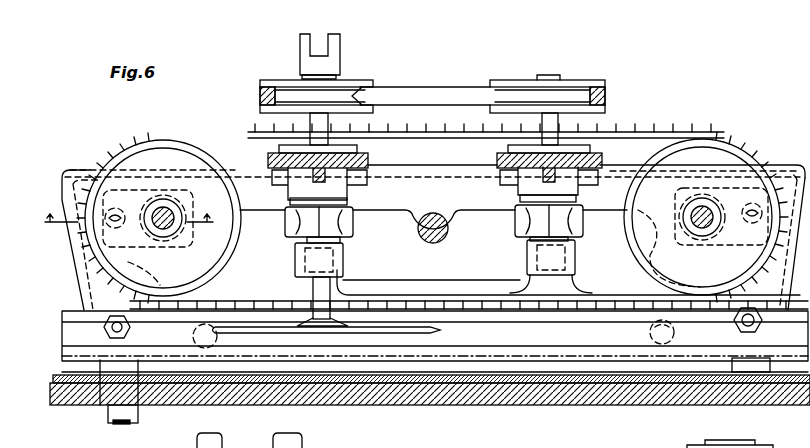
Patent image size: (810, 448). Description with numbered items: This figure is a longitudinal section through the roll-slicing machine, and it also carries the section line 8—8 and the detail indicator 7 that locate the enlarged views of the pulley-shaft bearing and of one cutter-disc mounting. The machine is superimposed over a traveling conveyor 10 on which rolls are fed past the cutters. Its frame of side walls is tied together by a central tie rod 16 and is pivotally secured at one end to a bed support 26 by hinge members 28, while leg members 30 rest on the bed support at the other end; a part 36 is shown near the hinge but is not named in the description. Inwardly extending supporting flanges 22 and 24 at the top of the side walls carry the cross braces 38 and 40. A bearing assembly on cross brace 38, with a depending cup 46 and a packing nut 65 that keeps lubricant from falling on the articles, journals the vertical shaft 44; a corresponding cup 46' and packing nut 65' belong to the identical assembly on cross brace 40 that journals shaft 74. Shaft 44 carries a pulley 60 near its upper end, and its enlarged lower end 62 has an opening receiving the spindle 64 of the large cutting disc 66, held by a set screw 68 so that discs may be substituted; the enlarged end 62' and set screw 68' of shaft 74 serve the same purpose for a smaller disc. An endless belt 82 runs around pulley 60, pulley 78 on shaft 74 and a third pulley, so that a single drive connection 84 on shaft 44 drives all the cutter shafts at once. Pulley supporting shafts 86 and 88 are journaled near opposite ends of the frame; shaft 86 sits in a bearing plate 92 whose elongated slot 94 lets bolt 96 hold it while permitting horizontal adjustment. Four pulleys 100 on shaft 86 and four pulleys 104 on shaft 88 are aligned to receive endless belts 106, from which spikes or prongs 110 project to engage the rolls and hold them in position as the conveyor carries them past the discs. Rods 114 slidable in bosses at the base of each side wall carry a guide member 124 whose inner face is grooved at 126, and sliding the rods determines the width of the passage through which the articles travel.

The detail section indicator 7 is at (165, 89).
The section line 8— 8 is at (128, 205).
The traveling conveyor 10 is at (432, 378).
The central tie rod 16 is at (418, 233).
The supporting flange 22 is at (282, 182).
The supporting flange 24 is at (510, 181).
The bed support 26 is at (66, 403).
The hinge members 28 is at (100, 405).
The leg members 30 is at (750, 363).
The nut 36 is at (78, 425).
The cross brace 38 is at (272, 163).
The cross brace 40 is at (500, 163).
The shaft 44 is at (270, 118).
The depending cup 46 is at (335, 194).
The washer 46' is at (566, 193).
The pulley 60 is at (283, 84).
The enlarged lower end of shaft 62 is at (299, 278).
The adjusting screw 62' is at (528, 250).
The spindle 64 is at (308, 285).
The packing nut 65 is at (301, 222).
The lock nut 65' is at (530, 221).
The cutting disc 66 is at (568, 282).
The set screw 68 is at (336, 260).
The slide block 68' is at (562, 266).
The shaft 74 is at (552, 120).
The pulley 78 is at (603, 84).
The endless belt 82 is at (453, 93).
The drive connection 84 is at (332, 64).
The pulley supporting shaft 86 is at (160, 214).
The pulley supporting shaft 88 is at (706, 222).
The bearing plate 92 is at (100, 172).
The elongated slot 94 is at (148, 236).
The bolt 96 is at (130, 232).
The pulleys 100 is at (142, 152).
The pulleys 104 is at (655, 258).
The endless belts 106 is at (666, 133).
The spikes or prongs 110 is at (740, 150).
The rods 114 is at (195, 333).
The guide member 124 is at (528, 373).
The groove 126 is at (530, 330).